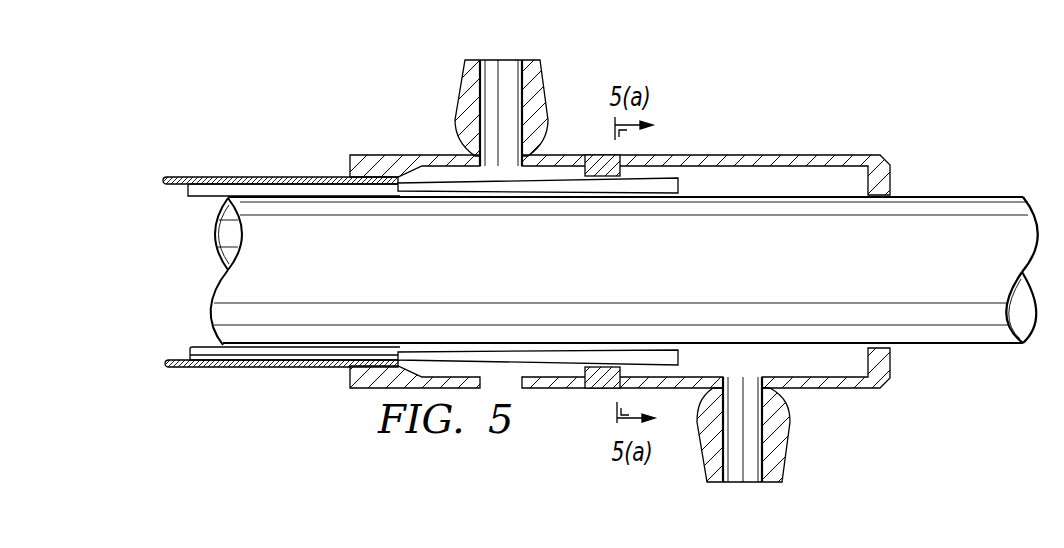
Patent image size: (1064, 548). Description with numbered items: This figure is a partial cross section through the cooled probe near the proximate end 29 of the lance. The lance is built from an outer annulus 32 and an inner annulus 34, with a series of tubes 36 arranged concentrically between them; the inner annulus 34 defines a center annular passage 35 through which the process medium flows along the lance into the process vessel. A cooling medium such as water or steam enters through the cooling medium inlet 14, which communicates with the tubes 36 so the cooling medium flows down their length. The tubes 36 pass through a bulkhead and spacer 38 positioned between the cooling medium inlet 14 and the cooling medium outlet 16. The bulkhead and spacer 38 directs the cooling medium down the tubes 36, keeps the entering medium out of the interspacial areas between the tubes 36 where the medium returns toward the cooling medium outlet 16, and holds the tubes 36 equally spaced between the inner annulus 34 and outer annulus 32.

The proximate end 29 is at (364, 86).
The cooling medium outlet 16 is at (471, 58).
The cooling medium inlet 14 is at (792, 456).
The outer annulus 32 is at (277, 177).
The inner annulus 34 is at (993, 196).
The center annular passage 35 is at (953, 279).
The tubes 36 is at (195, 199).
The bulkhead and spacer 38 is at (600, 155).